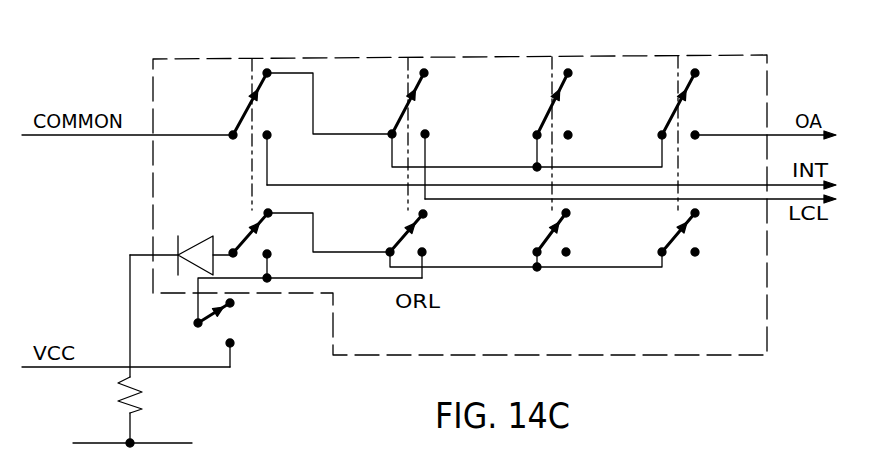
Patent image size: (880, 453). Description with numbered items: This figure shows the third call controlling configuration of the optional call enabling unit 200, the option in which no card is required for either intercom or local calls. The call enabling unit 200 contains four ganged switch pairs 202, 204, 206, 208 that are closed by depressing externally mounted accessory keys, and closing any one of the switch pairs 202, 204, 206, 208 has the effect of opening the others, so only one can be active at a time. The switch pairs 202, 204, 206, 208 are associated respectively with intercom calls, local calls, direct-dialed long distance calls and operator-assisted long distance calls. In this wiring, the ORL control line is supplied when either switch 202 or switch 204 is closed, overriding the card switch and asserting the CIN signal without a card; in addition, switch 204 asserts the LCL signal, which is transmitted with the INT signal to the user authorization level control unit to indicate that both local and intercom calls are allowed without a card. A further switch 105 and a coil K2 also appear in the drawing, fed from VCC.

The call enabling unit 200 is at (532, 75).
The ganged switch pair 202 is at (246, 199).
The ganged switch pair 204 is at (404, 198).
The ganged switch pair 206 is at (545, 211).
The ganged switch pair 208 is at (674, 210).
The switch 105 is at (210, 319).
The relay coil K2 is at (143, 406).